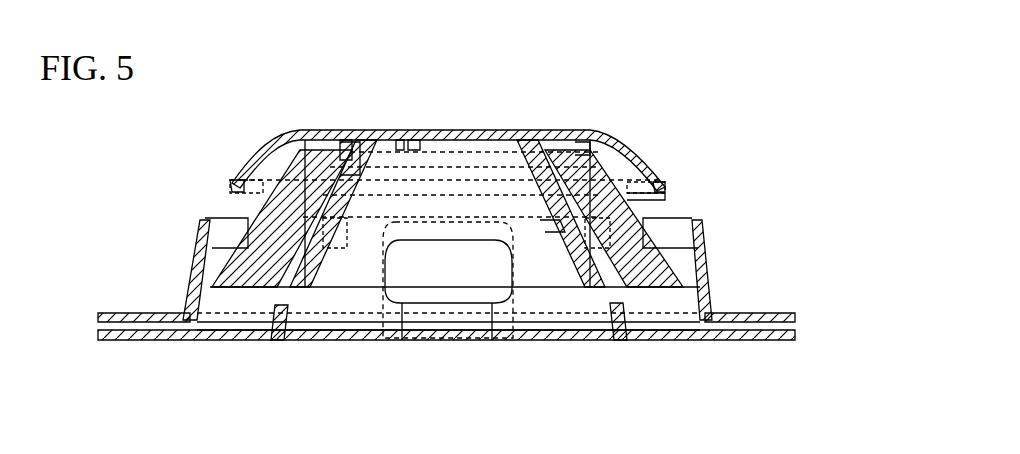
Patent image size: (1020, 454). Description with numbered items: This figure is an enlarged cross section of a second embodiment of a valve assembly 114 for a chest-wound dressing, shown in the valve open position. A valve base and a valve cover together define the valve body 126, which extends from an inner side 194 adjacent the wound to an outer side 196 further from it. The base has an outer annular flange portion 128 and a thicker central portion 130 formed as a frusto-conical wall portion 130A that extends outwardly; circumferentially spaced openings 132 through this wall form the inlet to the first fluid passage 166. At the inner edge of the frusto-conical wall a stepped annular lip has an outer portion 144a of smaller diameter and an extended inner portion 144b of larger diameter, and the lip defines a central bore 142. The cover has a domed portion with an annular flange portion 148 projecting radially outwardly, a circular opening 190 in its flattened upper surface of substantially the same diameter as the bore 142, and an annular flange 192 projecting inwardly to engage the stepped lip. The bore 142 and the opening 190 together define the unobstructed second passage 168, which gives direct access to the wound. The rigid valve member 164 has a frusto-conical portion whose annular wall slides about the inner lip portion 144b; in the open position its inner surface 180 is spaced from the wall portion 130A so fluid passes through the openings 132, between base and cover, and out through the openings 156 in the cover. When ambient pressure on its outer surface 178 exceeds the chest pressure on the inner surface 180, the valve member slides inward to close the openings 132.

The valve assembly 114 is at (648, 52).
The valve body 126 is at (703, 260).
The outer annular flange portion 128 is at (795, 338).
The central portion 130 is at (683, 335).
The frusto-conical wall portion 130A is at (545, 222).
The openings 132 is at (515, 320).
The central bore 142 is at (526, 150).
The outer portion of the lip 144a is at (413, 138).
The inner portion of the lip 144b is at (345, 135).
The annular flange portion 148 is at (793, 316).
The openings in the cover 156 is at (660, 195).
The valve member 164 is at (281, 211).
The first fluid passage 166 is at (352, 262).
The second passage 168 is at (348, 152).
The outer surface of the valve member 178 is at (230, 262).
The inner surface of the frusto-conical portion 180 is at (604, 258).
The circular opening 190 is at (398, 137).
The annular flange 192 is at (585, 140).
The inner side 194 is at (272, 332).
The outer side 196 is at (302, 131).